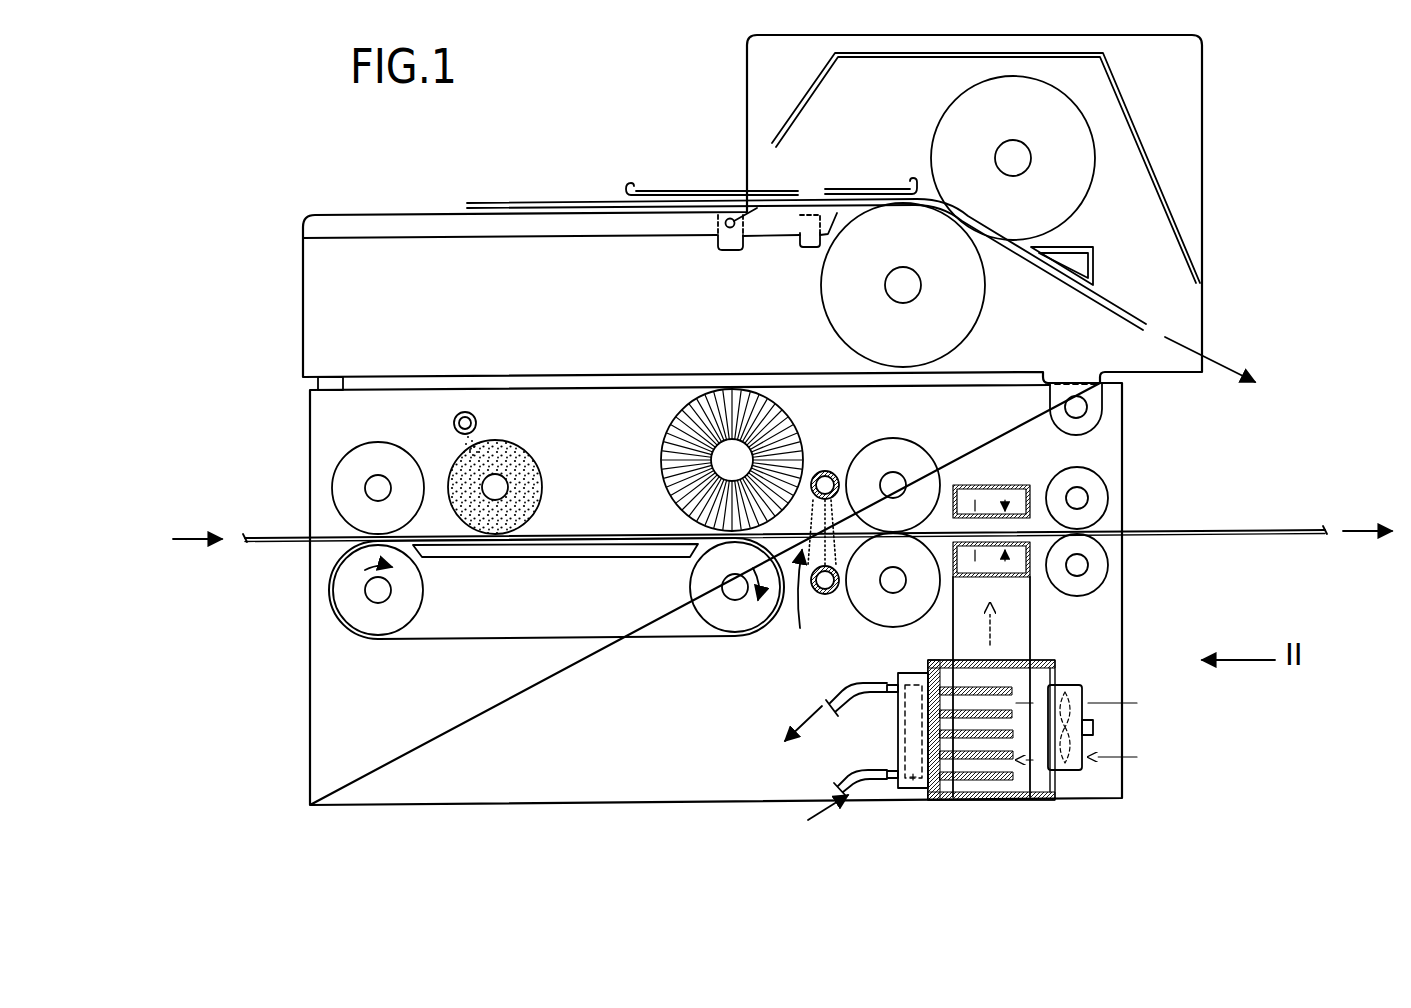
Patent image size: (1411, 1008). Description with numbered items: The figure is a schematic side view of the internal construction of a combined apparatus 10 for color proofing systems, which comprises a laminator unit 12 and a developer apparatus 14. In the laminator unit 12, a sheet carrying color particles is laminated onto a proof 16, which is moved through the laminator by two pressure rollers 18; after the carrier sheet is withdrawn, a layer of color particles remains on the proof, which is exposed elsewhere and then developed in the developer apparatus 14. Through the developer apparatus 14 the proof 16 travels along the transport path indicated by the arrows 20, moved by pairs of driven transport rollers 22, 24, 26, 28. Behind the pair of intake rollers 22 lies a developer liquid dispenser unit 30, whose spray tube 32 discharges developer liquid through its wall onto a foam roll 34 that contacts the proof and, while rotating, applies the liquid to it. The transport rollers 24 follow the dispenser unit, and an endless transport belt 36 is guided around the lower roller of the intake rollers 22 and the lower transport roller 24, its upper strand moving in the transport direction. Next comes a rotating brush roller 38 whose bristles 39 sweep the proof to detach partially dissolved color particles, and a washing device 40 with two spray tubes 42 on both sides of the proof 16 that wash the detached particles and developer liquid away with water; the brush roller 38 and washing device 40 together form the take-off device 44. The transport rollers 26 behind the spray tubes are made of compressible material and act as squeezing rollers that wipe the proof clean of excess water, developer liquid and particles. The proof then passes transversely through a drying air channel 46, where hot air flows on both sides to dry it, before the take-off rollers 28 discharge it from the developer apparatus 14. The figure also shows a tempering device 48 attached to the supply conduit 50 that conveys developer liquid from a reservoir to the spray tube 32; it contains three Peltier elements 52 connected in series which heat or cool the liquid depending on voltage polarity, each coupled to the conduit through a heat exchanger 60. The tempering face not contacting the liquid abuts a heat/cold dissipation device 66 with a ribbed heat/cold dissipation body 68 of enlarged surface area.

The combined apparatus 10 is at (1262, 348).
The laminator unit 12 is at (1187, 143).
The developer apparatus 14 is at (1107, 615).
The proof 16 is at (1143, 313).
The pressure rollers 18 is at (897, 227).
The arrows 20 is at (182, 535).
The intake rollers 22 is at (343, 470).
The transport rollers 24 is at (713, 608).
The transport rollers 26 is at (878, 603).
The take-off rollers 28 is at (1093, 547).
The developer liquid dispenser unit 30 is at (525, 416).
The spray tube 32 is at (477, 421).
The foam roll 34 is at (527, 487).
The transport belt 36 is at (500, 642).
The brush roller 38 is at (710, 418).
The bristles 39 is at (688, 423).
The washing device 40 is at (787, 607).
The spray tubes 42 is at (828, 476).
The take-off device 44 is at (792, 517).
The drying air channel 46 is at (993, 485).
The tempering device 48 is at (983, 776).
The supply conduit 50 is at (868, 790).
The Peltier elements 52 is at (915, 780).
The heat exchanger 60 is at (874, 769).
The heat/cold dissipation device 66 is at (1050, 808).
The heat/cold dissipation body 68 is at (942, 805).